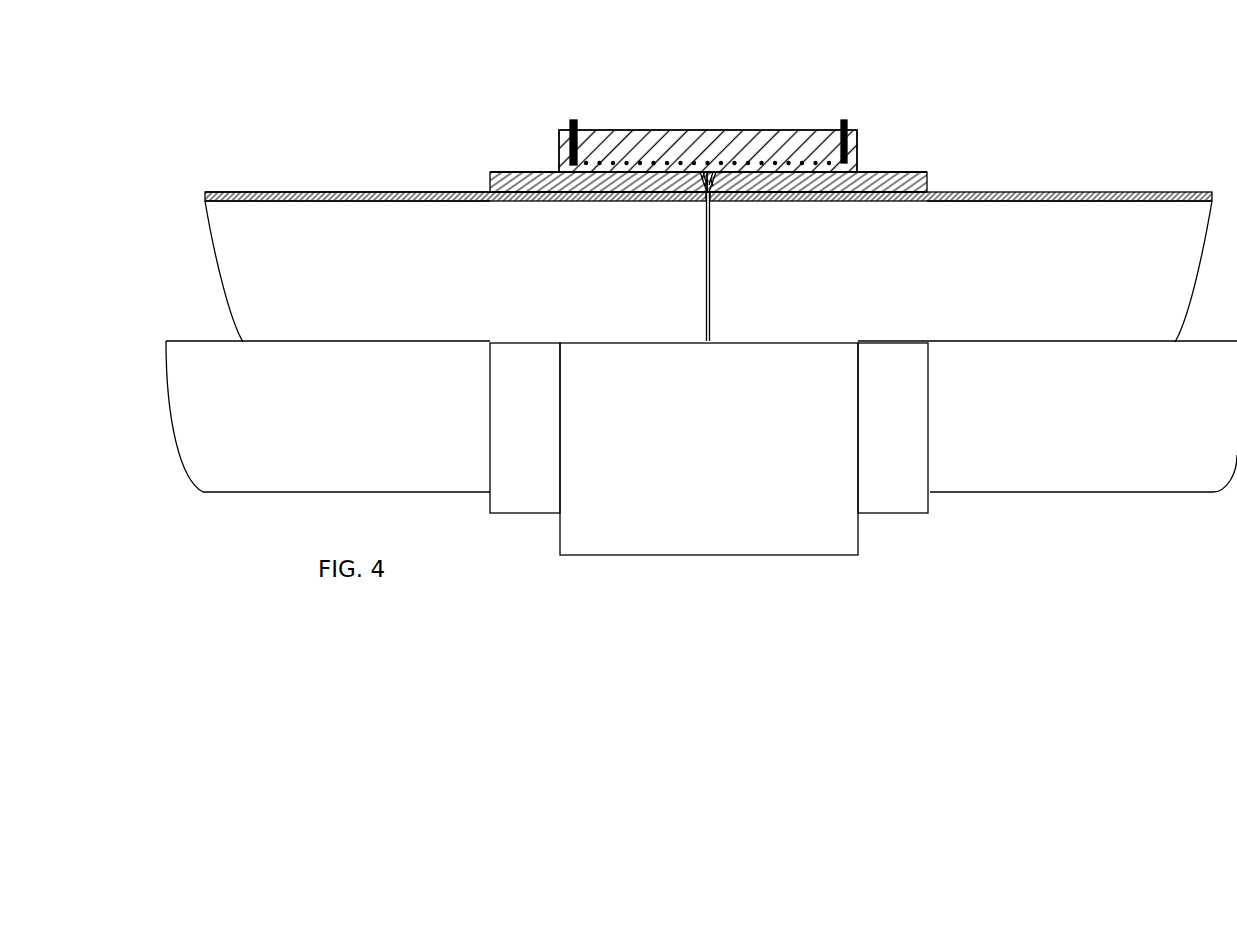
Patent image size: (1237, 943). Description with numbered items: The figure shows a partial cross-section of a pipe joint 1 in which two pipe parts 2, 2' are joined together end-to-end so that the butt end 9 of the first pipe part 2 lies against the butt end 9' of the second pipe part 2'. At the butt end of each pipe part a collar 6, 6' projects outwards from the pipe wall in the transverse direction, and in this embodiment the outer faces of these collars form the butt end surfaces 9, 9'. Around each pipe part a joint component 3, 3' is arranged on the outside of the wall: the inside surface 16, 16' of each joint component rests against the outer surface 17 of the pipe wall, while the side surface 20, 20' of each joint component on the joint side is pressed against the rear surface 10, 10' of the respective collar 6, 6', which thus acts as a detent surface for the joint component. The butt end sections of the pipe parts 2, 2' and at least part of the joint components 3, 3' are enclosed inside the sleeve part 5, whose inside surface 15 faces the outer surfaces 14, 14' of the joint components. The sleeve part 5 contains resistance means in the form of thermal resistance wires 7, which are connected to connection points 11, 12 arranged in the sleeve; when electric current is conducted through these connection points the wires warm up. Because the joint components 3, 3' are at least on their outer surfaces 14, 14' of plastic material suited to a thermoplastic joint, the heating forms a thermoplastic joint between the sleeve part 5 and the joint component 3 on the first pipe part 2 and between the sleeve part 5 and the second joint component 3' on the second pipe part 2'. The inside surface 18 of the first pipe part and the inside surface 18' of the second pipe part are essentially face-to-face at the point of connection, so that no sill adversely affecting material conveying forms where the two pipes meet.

The pipe joint 1 is at (543, 72).
The first pipe part 2 is at (455, 241).
The second pipe part 2' is at (961, 243).
The joint component 3 is at (565, 160).
The second joint component 3' is at (837, 156).
The sleeve part 5 is at (778, 140).
The collar part 6 is at (694, 231).
The collar part 6' is at (741, 237).
The resistance wires 7 is at (674, 163).
The butt end surface 9 is at (692, 271).
The butt end surface 9' is at (726, 271).
The rear surface of the collar 10 is at (681, 210).
The rear surface of the collar 10' is at (742, 213).
The connection point 11 is at (845, 120).
The connection point 12 is at (578, 120).
The outer surface of the joint component 14 is at (528, 133).
The outer surface of the joint component 14' is at (892, 135).
The inside surface of the sleeve part 15 is at (785, 173).
The inside surface of the joint component 16 is at (598, 251).
The inside surface of the joint component 16' is at (839, 251).
The outer surface of the pipe wall 17 is at (397, 192).
The inside surface of the first pipe part 18 is at (347, 246).
The inside surface of the second pipe part 18' is at (1069, 246).
The side surface of the joint component 20 is at (668, 204).
The side surface of the joint component 20' is at (758, 204).